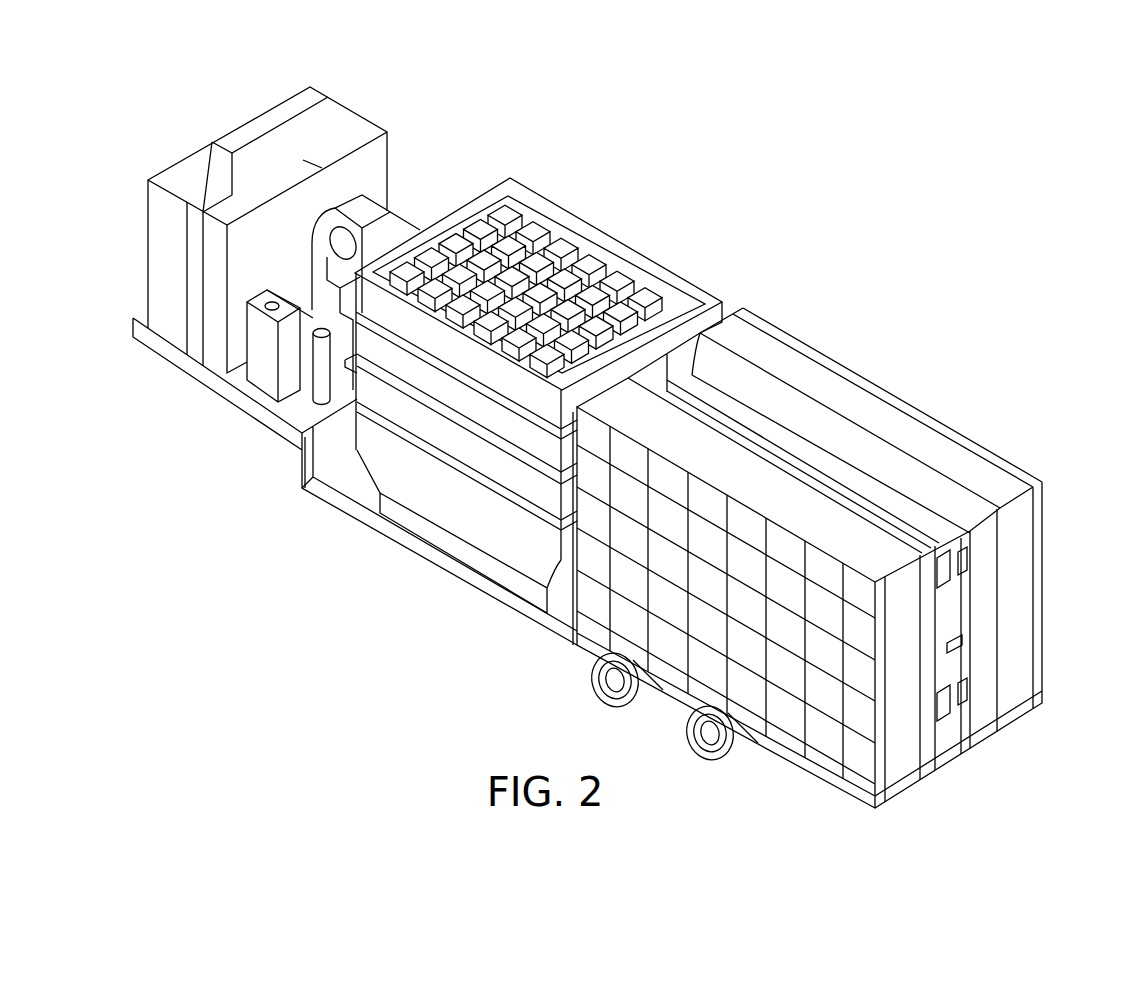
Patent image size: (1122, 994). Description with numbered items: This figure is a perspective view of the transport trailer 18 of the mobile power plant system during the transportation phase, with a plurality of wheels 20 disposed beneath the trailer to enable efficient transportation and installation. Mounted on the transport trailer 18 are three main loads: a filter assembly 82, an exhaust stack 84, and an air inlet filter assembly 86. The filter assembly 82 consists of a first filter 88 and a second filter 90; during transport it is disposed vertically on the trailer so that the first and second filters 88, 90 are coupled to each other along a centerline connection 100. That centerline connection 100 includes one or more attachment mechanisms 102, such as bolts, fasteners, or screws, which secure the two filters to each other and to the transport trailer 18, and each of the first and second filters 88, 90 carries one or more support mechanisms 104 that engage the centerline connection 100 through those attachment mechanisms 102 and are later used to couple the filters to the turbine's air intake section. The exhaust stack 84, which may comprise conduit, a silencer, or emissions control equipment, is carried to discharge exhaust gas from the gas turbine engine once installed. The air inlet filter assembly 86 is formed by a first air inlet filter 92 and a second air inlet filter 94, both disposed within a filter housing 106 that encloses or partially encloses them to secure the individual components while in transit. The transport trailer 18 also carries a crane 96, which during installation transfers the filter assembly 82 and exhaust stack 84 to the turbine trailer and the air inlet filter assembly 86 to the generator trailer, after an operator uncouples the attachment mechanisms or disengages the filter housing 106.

The transport trailer 18 is at (714, 128).
The wheels 20 is at (610, 708).
The filter assembly 82 is at (847, 564).
The exhaust stack 84 is at (623, 242).
The air inlet filter assembly 86 is at (301, 224).
The first filter 88 is at (982, 477).
The second filter 90 is at (843, 530).
The first air inlet filter 92 is at (267, 115).
The second air inlet filter 94 is at (294, 165).
The crane 96 is at (397, 232).
The centerline connection 100 is at (813, 463).
The attachment mechanisms 102 is at (967, 650).
The support mechanisms 104 is at (950, 578).
The filter housing 106 is at (343, 123).